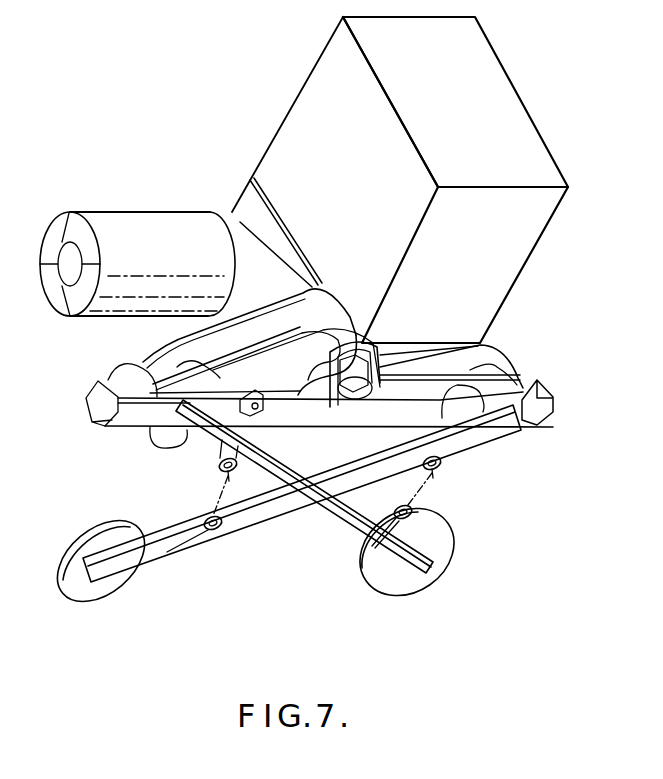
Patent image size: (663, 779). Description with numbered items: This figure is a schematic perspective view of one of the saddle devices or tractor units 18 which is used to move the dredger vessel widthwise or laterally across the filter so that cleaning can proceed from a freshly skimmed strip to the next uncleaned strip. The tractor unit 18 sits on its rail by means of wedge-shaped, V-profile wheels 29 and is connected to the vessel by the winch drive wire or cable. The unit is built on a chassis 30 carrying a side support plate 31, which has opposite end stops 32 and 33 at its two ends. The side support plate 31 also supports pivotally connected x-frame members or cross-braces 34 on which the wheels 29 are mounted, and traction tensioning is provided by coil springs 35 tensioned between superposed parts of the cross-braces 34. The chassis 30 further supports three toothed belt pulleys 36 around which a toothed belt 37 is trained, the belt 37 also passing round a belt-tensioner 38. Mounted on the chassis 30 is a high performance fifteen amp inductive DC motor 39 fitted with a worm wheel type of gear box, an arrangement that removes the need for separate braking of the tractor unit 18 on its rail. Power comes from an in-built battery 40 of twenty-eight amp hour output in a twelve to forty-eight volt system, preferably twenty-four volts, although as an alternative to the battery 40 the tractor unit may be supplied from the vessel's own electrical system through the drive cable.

The tractor unit 18 is at (302, 548).
The wheel 29 is at (110, 585).
The chassis 30 is at (228, 280).
The side support plate 31 is at (303, 417).
The end stop 32 is at (88, 407).
The end stop 33 is at (535, 413).
The cross-brace 34 is at (197, 427).
The coil spring 35 is at (213, 540).
The toothed belt pulley 36 is at (300, 385).
The toothed belt 37 is at (437, 455).
The belt-tensioner 38 is at (370, 385).
The inductive DC motor 39 is at (138, 228).
The battery 40 is at (512, 118).